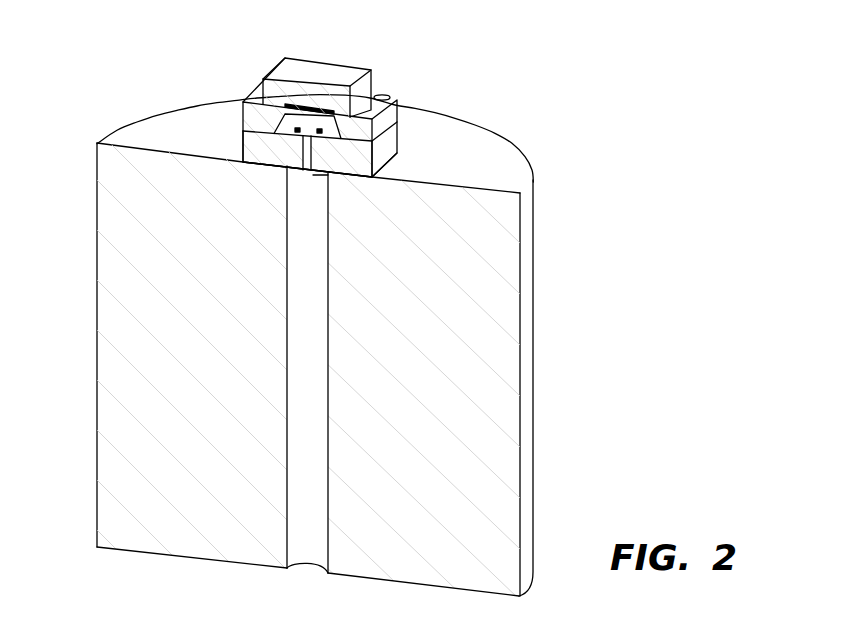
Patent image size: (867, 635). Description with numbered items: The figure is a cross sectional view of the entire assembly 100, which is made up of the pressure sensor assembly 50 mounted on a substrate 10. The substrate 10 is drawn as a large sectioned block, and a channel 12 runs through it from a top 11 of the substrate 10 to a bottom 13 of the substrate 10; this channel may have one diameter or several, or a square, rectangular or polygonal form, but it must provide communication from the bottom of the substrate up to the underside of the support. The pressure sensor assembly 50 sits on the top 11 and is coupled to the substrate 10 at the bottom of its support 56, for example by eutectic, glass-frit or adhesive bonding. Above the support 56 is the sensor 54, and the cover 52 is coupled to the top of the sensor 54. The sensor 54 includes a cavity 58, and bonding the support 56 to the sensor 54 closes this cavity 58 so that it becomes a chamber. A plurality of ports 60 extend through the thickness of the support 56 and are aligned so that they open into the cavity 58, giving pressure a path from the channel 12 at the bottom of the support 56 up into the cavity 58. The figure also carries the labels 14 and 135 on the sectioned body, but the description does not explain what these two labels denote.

The substrate 10 is at (332, 317).
The top of the substrate 11 is at (500, 170).
The channel 12 is at (305, 386).
The bottom of the substrate 13 is at (152, 552).
The electrode assembly section 14 is at (305, 213).
The central opening 135 is at (317, 175).
The pressure sensor assembly 50 is at (322, 155).
The cover 52 is at (292, 72).
The sensor 54 is at (258, 117).
The support 56 is at (257, 148).
The cavity 58 is at (392, 103).
The ports 60 is at (378, 167).
The entire assembly 100 is at (640, 128).